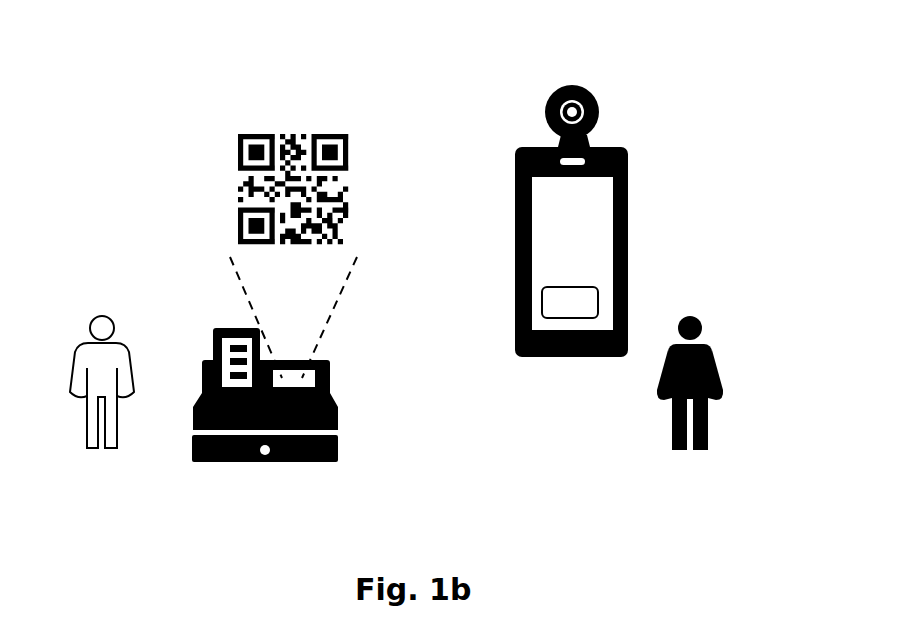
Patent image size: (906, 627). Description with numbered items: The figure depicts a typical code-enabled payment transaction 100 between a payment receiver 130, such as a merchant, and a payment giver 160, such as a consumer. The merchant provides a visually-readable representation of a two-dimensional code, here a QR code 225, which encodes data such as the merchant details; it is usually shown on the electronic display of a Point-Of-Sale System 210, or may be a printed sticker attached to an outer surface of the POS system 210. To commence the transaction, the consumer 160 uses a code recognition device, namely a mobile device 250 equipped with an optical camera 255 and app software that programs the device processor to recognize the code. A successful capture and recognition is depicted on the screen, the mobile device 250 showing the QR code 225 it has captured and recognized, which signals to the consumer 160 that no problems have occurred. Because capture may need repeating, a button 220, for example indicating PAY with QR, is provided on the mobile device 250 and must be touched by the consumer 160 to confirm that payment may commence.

The code-enabled payment transaction 100 is at (420, 44).
The payment receiver 130 is at (100, 316).
The payment giver 160 is at (713, 358).
The point-of-sale system 210 is at (337, 407).
The button 220 is at (600, 292).
The QR code 225 is at (237, 198).
The mobile device 250 is at (628, 150).
The optical camera 255 is at (601, 106).